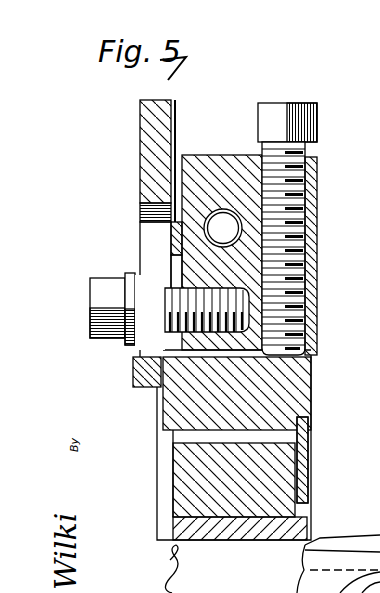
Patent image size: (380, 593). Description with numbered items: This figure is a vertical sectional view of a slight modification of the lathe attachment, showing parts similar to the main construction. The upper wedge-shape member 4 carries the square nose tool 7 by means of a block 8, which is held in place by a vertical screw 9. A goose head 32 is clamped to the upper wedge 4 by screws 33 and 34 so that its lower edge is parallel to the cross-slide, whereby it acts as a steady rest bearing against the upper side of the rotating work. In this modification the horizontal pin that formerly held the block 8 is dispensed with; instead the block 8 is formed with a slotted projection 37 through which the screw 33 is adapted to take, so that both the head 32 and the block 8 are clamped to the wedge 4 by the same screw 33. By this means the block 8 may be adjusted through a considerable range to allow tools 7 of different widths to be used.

The upper wedge-shape member 4 is at (208, 162).
The square nose tool 7 is at (298, 466).
The block 8 is at (312, 387).
The vertical screw 9 is at (312, 130).
The goose head 32 is at (150, 169).
The screw 33 is at (97, 291).
The screw 34 is at (317, 226).
The slotted projection 37 is at (128, 256).